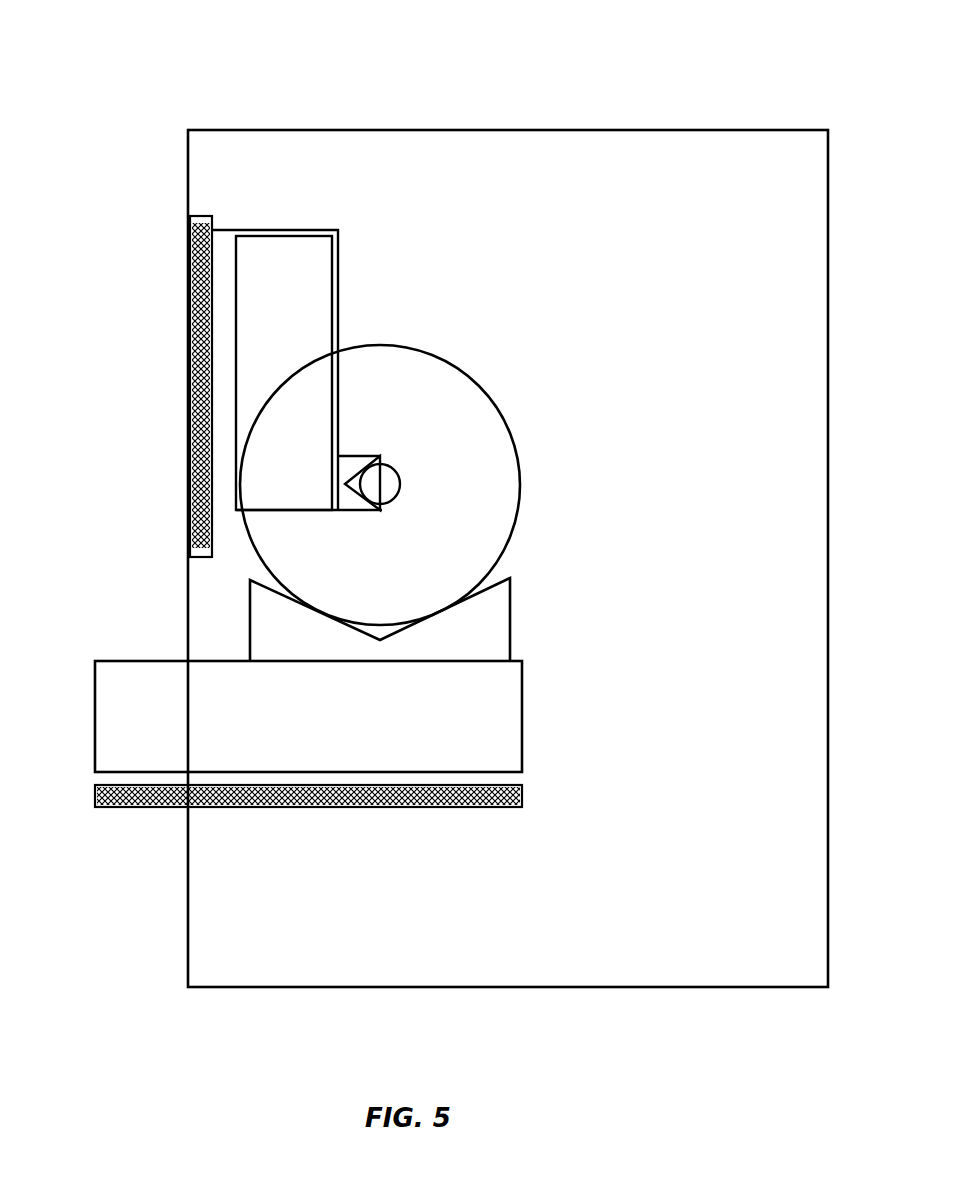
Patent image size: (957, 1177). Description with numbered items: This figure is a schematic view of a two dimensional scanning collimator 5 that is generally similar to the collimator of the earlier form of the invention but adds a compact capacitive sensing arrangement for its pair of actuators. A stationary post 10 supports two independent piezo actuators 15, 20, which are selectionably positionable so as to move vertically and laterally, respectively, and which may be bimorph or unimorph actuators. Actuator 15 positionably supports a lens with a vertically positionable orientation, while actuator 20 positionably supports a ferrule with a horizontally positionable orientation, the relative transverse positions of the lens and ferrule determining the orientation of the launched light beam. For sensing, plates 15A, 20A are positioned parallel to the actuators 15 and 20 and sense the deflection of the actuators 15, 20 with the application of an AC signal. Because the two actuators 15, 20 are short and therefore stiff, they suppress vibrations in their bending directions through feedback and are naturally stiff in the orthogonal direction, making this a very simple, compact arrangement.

The two dimensional scanning collimator 5 is at (158, 60).
The stationary post 10 is at (686, 172).
The piezo actuator 15 is at (500, 712).
The plate 15A is at (105, 798).
The piezo actuator 20 is at (318, 276).
The plate 20A is at (200, 326).